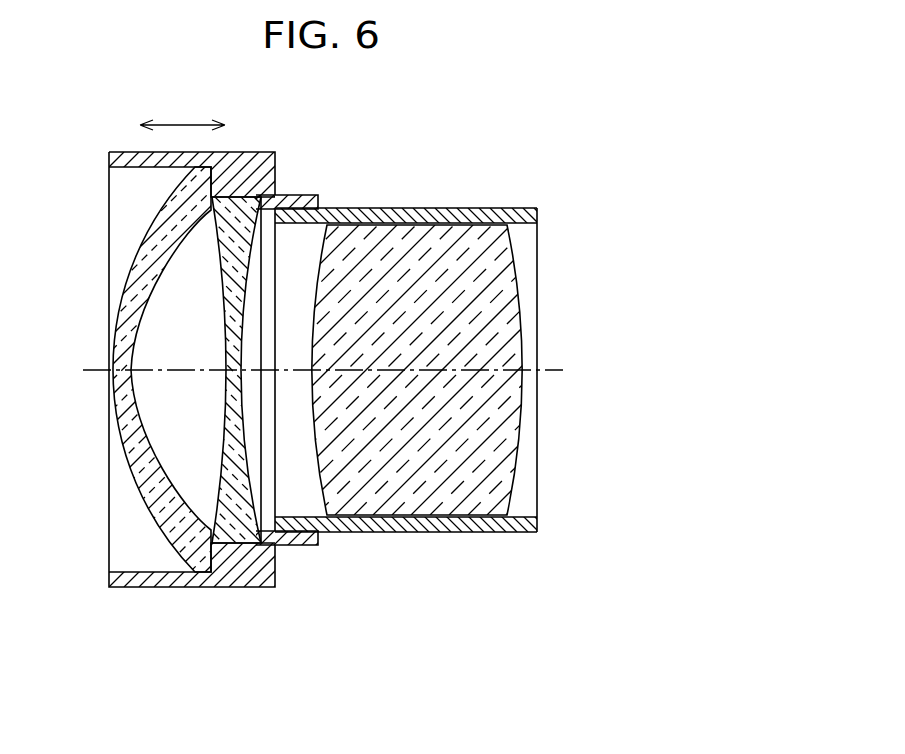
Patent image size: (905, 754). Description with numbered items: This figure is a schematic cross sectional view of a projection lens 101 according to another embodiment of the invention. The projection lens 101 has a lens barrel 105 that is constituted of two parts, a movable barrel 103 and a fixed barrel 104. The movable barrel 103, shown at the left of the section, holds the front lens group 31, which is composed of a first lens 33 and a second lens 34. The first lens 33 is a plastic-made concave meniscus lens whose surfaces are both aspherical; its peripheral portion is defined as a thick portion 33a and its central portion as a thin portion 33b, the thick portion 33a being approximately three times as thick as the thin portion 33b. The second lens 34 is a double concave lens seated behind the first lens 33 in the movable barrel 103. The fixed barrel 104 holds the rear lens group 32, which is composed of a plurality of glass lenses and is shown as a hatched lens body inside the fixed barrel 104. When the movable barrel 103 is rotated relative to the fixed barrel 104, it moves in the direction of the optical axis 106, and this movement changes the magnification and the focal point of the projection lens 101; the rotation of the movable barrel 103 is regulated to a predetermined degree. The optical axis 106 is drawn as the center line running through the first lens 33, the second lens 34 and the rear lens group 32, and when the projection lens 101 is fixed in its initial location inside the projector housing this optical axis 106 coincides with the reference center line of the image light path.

The projection lens 101 is at (429, 314).
The movable barrel 103 is at (290, 196).
The fixed barrel 104 is at (352, 209).
The lens barrel 105 is at (429, 314).
The optical axis 106 is at (553, 372).
The front lens group 31 is at (258, 642).
The rear lens group 32 is at (408, 500).
The first lens 33 is at (171, 403).
The thick portion 33a is at (181, 199).
The thin portion 33b is at (120, 383).
The second lens 34 is at (235, 535).